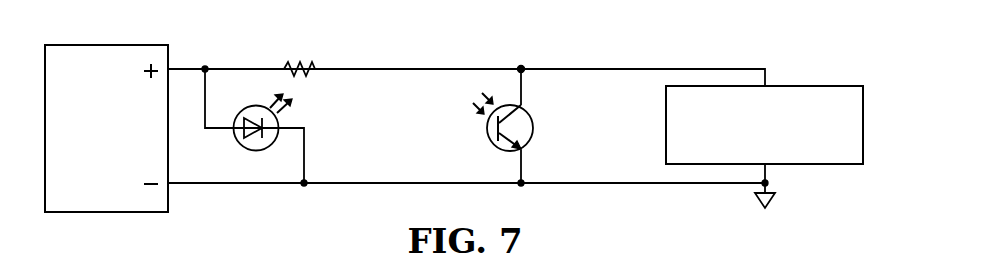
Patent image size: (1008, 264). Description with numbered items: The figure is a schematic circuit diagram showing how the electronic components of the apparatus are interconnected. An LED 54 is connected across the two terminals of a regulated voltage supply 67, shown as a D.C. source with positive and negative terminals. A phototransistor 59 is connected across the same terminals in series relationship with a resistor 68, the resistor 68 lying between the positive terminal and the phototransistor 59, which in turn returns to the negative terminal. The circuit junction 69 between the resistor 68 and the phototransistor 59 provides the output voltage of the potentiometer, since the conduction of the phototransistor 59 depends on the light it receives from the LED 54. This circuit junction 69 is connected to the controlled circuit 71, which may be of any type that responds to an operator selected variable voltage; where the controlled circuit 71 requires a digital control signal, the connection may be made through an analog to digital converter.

The LED 54 is at (243, 148).
The phototransistor 59 is at (532, 145).
The regulated voltage supply 67 is at (168, 202).
The resistor 68 is at (311, 73).
The circuit junction 69 is at (527, 70).
The controlled circuit 71 is at (810, 164).